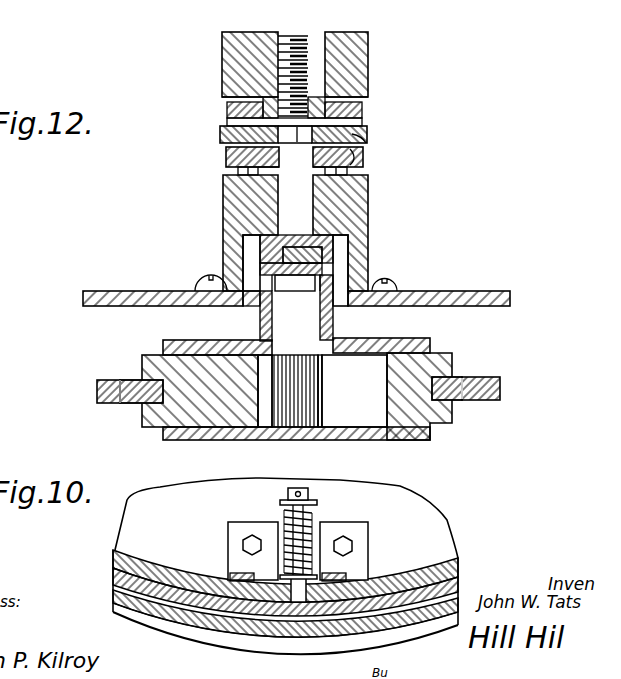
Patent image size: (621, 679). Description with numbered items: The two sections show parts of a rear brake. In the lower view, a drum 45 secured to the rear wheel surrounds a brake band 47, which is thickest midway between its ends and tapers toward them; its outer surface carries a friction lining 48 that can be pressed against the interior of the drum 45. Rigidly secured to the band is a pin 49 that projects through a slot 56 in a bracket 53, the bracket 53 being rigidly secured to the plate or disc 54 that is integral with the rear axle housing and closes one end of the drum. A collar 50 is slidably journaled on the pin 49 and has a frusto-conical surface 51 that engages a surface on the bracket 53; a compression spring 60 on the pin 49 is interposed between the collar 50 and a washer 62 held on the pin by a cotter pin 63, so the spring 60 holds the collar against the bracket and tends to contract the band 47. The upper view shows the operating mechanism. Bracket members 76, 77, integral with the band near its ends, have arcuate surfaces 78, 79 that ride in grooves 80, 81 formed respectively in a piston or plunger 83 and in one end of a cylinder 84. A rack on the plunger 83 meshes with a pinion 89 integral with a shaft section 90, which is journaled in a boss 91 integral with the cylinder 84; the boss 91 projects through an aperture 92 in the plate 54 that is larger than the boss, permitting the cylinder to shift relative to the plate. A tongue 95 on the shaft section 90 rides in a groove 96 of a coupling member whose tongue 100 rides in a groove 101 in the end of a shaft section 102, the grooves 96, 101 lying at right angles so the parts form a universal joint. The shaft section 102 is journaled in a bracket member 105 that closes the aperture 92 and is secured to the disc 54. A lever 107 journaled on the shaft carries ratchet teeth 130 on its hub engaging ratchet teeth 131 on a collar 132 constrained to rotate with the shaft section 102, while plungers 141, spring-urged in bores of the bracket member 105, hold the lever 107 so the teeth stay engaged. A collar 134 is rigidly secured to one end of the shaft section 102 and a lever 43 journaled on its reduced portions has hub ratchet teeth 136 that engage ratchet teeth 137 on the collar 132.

In FIG. 12, the collar 134 is at (367, 73).
In FIG. 12, the ratchet teeth 136 is at (231, 116).
In FIG. 12, the lever 43 is at (363, 109).
In FIG. 12, the ratchet teeth 137 is at (226, 124).
In FIG. 12, the collar 132 is at (223, 131).
In FIG. 12, the ratchet teeth 131 is at (368, 135).
In FIG. 12, the lever 107 is at (236, 158).
In FIG. 12, the ratchet teeth 130 is at (364, 158).
In FIG. 12, the plungers 141 is at (245, 171).
In FIG. 12, the bracket member 105 is at (238, 193).
In FIG. 12, the shaft section 102 is at (302, 203).
In FIG. 12, the groove 101 is at (290, 253).
In FIG. 12, the groove 96 is at (328, 281).
In FIG. 12, the tongue 100 is at (333, 244).
In FIG. 12, the plate or disc 54 is at (443, 283).
In FIG. 12, the aperture 92 is at (252, 300).
In FIG. 12, the tongue 95 is at (297, 288).
In FIG. 12, the shaft section 90 is at (278, 334).
In FIG. 12, the boss 91 is at (333, 331).
In FIG. 12, the piston or plunger 83 is at (165, 421).
In FIG. 12, the cylinder 84 is at (432, 441).
In FIG. 12, the groove 80 is at (168, 382).
In FIG. 12, the pinion 89 is at (320, 398).
In FIG. 12, the groove 81 is at (408, 416).
In FIG. 12, the arcuate surface 78 is at (175, 403).
In FIG. 12, the bracket member 76 is at (97, 395).
In FIG. 12, the arcuate surface 79 is at (456, 385).
In FIG. 12, the bracket member 77 is at (505, 371).
In FIG. 10, the brake band 47 is at (141, 567).
In FIG. 10, the friction lining 48 is at (183, 584).
In FIG. 10, the drum 45 is at (265, 642).
In FIG. 10, the bracket 53 is at (368, 549).
In FIG. 10, the slot 56 is at (266, 580).
In FIG. 10, the frusto-conical surface 51 is at (300, 603).
In FIG. 10, the compression spring 60 is at (285, 510).
In FIG. 10, the pin 49 is at (313, 510).
In FIG. 10, the collar 50 is at (311, 577).
In FIG. 10, the washer 62 is at (309, 496).
In FIG. 10, the cotter pin 63 is at (300, 491).